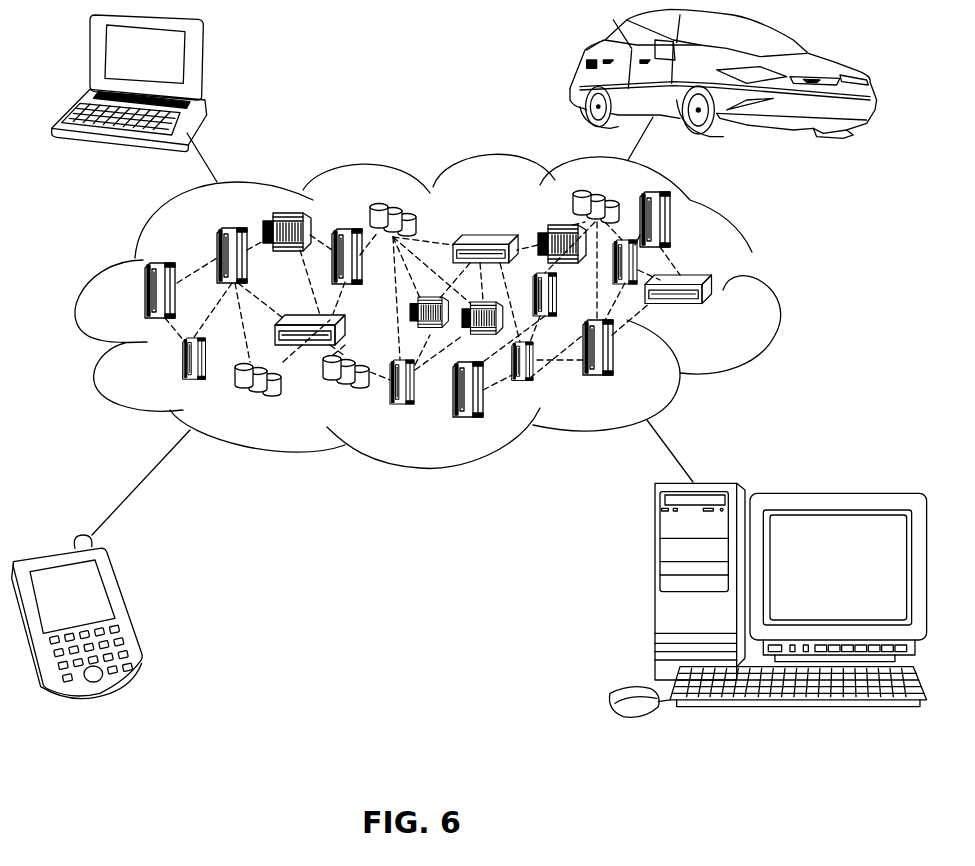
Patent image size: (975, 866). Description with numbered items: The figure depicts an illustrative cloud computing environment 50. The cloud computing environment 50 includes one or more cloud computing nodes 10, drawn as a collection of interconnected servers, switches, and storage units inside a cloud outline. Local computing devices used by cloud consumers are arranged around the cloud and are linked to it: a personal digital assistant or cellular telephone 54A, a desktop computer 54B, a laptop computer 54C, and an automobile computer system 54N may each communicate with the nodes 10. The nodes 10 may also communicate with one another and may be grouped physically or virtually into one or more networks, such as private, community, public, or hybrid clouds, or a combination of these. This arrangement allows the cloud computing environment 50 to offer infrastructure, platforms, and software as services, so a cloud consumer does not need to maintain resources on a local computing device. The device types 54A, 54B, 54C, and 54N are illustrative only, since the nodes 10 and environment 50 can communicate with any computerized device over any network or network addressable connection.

The cloud computing nodes 10 is at (730, 312).
The cloud computing environment 50 is at (752, 252).
The personal digital assistant or cellular telephone 54A is at (123, 608).
The desktop computer 54B is at (847, 492).
The laptop computer 54C is at (205, 60).
The automobile computer system 54N is at (575, 66).